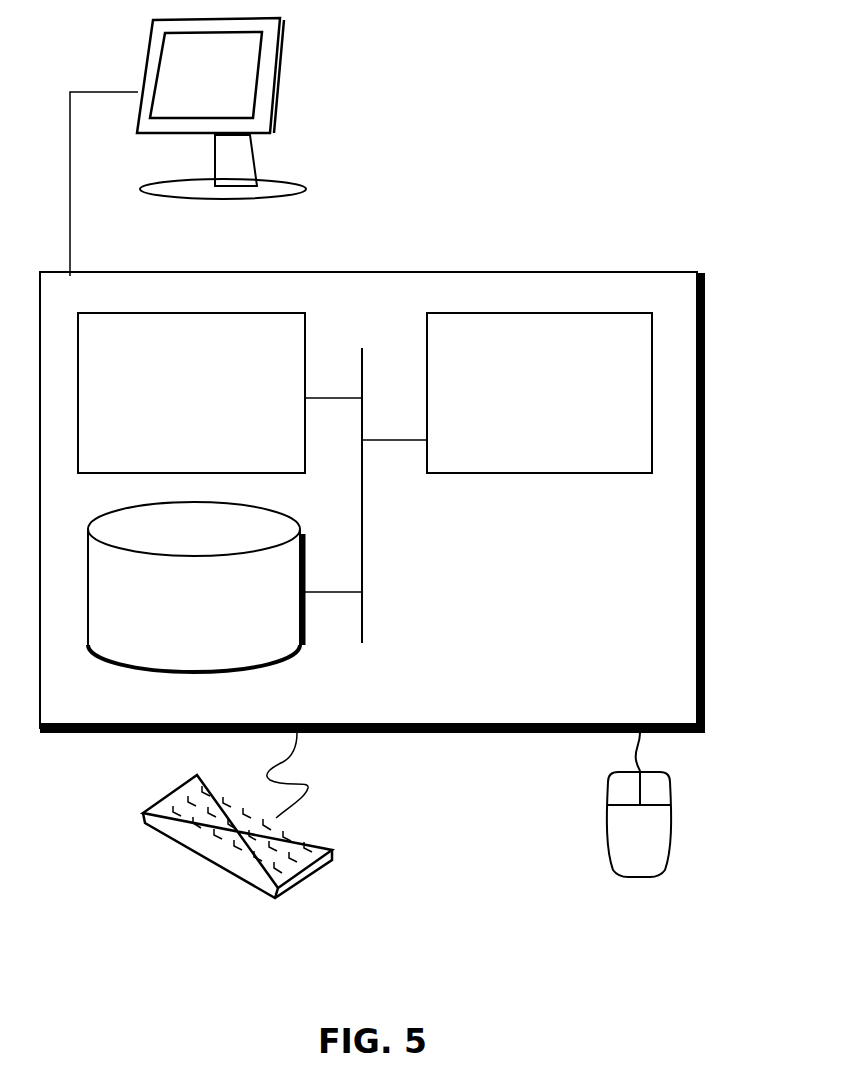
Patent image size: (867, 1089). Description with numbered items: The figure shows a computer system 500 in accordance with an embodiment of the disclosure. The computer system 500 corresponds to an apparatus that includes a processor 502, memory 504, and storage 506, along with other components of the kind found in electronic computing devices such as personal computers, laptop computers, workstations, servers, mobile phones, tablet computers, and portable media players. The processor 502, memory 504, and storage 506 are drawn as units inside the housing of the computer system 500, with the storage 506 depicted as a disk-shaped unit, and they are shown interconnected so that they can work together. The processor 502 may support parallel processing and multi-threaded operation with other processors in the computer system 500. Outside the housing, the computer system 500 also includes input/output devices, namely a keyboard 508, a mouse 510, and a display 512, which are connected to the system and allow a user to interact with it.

The computer system 500 is at (415, 250).
The processor 502 is at (539, 393).
The memory 504 is at (191, 393).
The storage 506 is at (195, 587).
The keyboard 508 is at (162, 837).
The mouse 510 is at (639, 805).
The display 512 is at (188, 147).